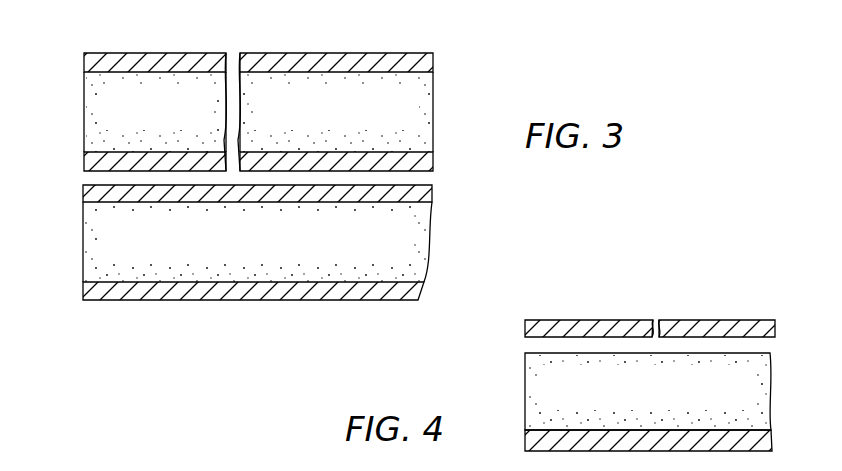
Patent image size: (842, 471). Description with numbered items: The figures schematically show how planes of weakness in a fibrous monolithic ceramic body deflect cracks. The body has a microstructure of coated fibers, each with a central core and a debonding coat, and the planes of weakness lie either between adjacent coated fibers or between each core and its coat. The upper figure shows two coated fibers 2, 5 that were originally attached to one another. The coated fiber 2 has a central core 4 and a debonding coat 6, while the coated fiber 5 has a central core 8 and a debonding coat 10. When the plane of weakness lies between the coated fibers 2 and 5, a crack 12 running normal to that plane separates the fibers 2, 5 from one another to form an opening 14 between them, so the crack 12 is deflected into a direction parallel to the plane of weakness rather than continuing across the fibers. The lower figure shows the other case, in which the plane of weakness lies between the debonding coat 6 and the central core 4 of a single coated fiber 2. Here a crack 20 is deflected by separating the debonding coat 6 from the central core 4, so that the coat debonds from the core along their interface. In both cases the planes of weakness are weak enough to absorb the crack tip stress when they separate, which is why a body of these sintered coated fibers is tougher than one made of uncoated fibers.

In FIG. 3, the coated fiber 2 is at (268, 93).
In FIG. 4, the coated fiber 2 is at (620, 368).
In FIG. 3, the central core 4 is at (168, 78).
In FIG. 4, the central core 4 is at (541, 383).
In FIG. 3, the coated fiber 5 is at (253, 262).
In FIG. 3, the debonding coat 6 is at (84, 163).
In FIG. 4, the debonding coat 6 is at (594, 322).
In FIG. 3, the central core 8 is at (168, 275).
In FIG. 3, the debonding coat 10 is at (84, 190).
In FIG. 3, the crack 12 is at (233, 62).
In FIG. 3, the opening 14 is at (415, 177).
In FIG. 4, the crack 20 is at (658, 320).